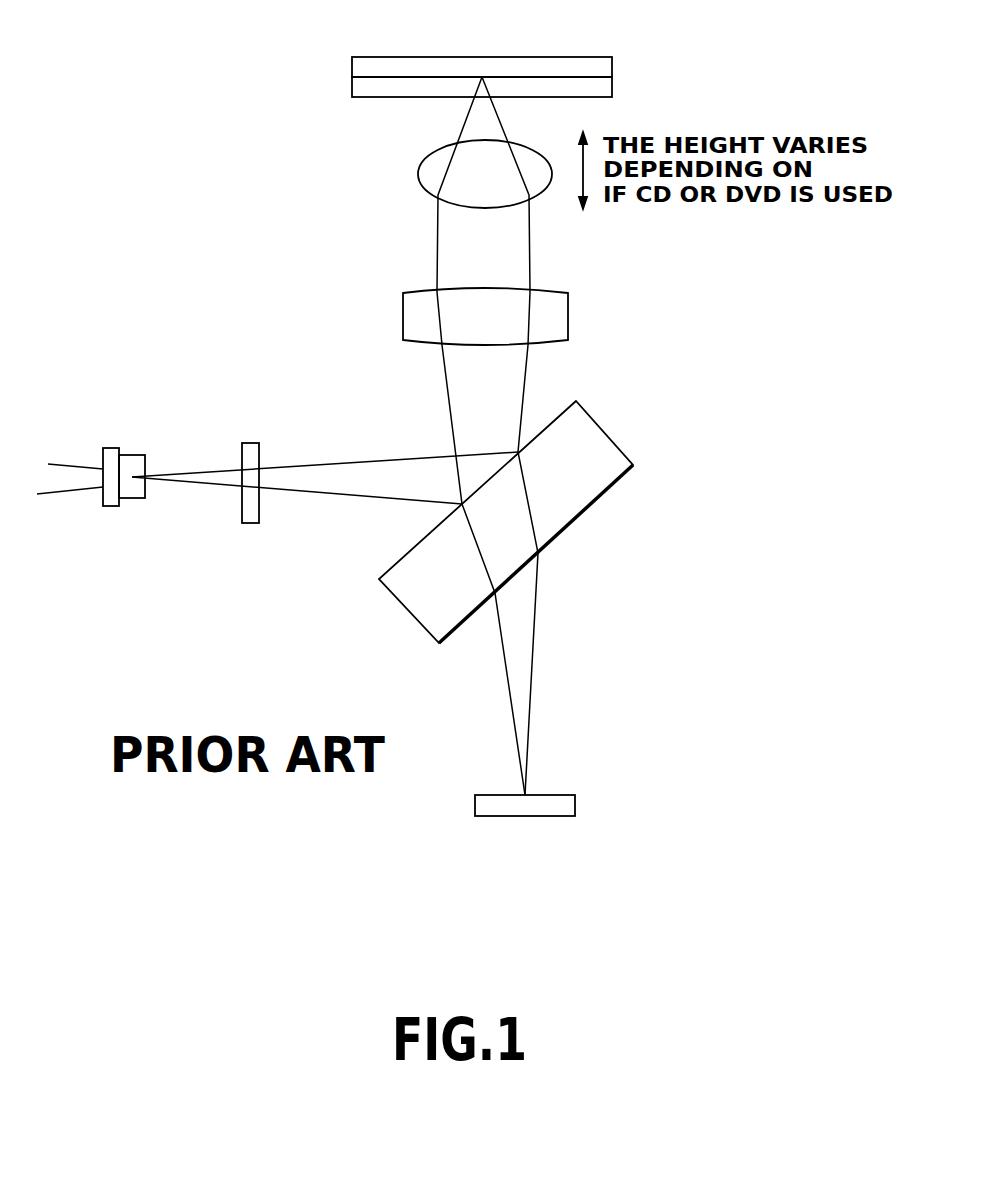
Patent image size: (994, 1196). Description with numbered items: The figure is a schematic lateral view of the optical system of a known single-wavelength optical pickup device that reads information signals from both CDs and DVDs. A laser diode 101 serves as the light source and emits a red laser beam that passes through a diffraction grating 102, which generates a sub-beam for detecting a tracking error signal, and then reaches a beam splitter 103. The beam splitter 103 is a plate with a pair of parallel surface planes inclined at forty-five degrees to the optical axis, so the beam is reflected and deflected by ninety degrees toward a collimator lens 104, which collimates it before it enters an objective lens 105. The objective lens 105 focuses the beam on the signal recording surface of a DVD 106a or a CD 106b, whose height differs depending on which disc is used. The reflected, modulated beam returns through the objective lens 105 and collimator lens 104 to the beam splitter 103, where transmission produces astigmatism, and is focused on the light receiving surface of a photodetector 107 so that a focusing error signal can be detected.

The laser diode 101 is at (112, 448).
The diffraction grating 102 is at (250, 450).
The beam splitter 103 is at (583, 495).
The collimator lens 104 is at (415, 318).
The objective lens 105 is at (422, 165).
The DVD 106a is at (372, 88).
The CD 106b is at (372, 63).
The photodetector 107 is at (568, 805).